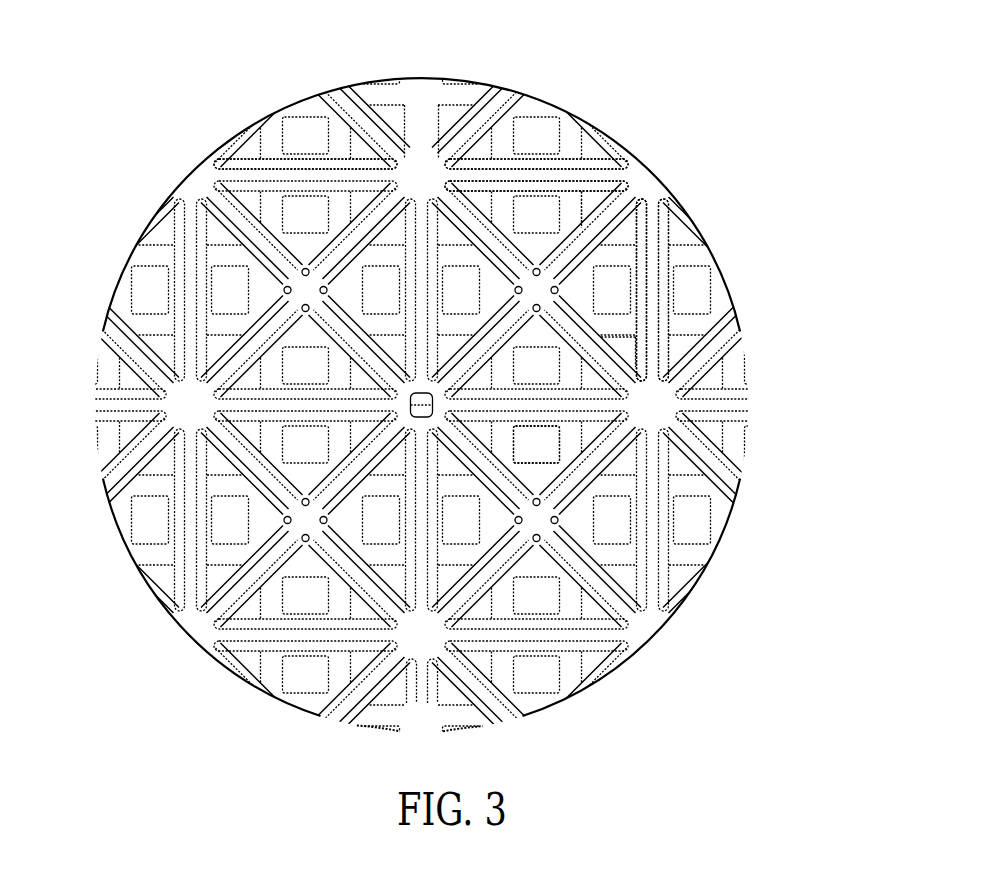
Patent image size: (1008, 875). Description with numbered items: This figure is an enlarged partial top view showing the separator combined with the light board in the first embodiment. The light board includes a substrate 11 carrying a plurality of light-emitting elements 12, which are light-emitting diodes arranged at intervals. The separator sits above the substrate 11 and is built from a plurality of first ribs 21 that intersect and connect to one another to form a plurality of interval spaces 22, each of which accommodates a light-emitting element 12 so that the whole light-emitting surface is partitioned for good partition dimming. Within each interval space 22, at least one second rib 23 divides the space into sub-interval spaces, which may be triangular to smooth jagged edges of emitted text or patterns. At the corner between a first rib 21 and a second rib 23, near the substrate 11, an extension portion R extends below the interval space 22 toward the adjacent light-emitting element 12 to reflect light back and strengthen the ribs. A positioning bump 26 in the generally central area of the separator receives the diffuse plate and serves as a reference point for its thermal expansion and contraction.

The substrate 11 is at (153, 253).
The light-emitting element 12 is at (545, 445).
The first rib 21 is at (612, 177).
The interval space 22 is at (655, 324).
The second rib 23 is at (633, 365).
The positioning bump 26 is at (405, 398).
The extension portion R is at (358, 145).